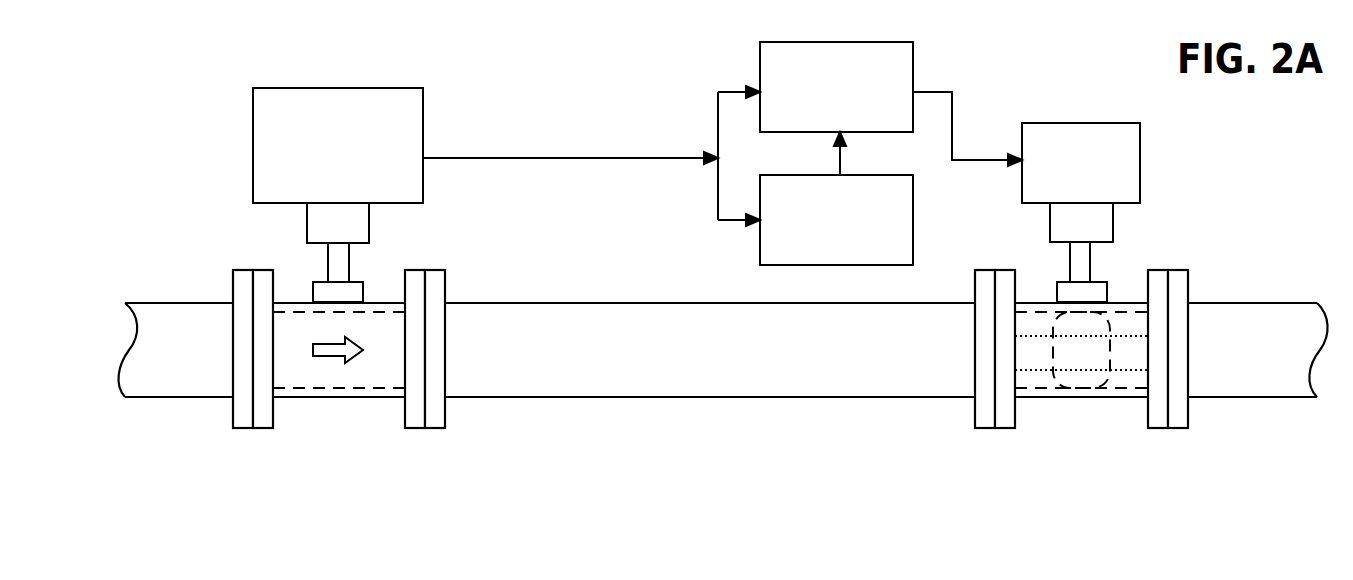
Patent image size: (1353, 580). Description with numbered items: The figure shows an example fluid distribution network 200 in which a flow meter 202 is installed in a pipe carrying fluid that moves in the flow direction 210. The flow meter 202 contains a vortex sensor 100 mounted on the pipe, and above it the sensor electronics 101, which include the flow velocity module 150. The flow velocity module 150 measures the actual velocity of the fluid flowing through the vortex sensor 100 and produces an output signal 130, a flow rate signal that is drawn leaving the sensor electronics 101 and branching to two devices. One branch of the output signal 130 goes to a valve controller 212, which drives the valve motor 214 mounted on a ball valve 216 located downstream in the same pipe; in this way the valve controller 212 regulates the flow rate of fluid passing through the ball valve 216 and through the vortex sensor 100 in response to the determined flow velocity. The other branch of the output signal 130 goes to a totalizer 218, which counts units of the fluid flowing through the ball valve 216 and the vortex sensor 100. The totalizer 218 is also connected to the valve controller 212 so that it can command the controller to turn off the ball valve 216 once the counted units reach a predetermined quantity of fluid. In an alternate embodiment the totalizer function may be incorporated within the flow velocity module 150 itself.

The vortex sensor 100 is at (301, 269).
The sensor electronics 101 is at (265, 145).
The output signal 130 is at (569, 158).
The flow velocity module 150 is at (393, 168).
The fluid distribution network 200 is at (670, 432).
The flow meter 202 is at (265, 136).
The flow direction 210 is at (325, 375).
The valve controller 212 is at (850, 123).
The valve motor 214 is at (1071, 111).
The ball valve 216 is at (1074, 412).
The totalizer 218 is at (850, 241).